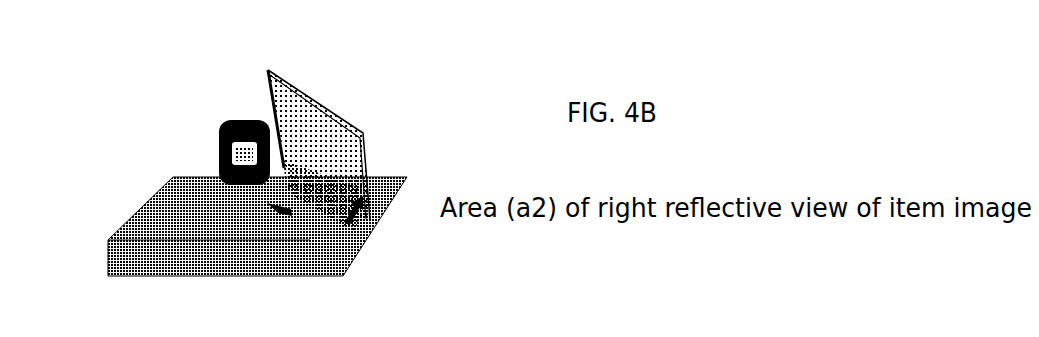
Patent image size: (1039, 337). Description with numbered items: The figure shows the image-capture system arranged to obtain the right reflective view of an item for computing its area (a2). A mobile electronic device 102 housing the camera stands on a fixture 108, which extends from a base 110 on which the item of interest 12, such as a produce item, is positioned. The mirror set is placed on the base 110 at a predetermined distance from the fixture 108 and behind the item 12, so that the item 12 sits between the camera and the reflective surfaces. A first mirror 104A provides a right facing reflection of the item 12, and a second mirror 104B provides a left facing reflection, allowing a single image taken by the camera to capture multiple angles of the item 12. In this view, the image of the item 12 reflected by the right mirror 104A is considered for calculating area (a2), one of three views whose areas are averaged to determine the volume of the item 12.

The item of interest 12 is at (338, 168).
The mobile electronic device 102 is at (244, 117).
The first mirror 104A is at (272, 65).
The second mirror 104B is at (329, 336).
The fixture 108 is at (262, 237).
The base 110 is at (367, 257).